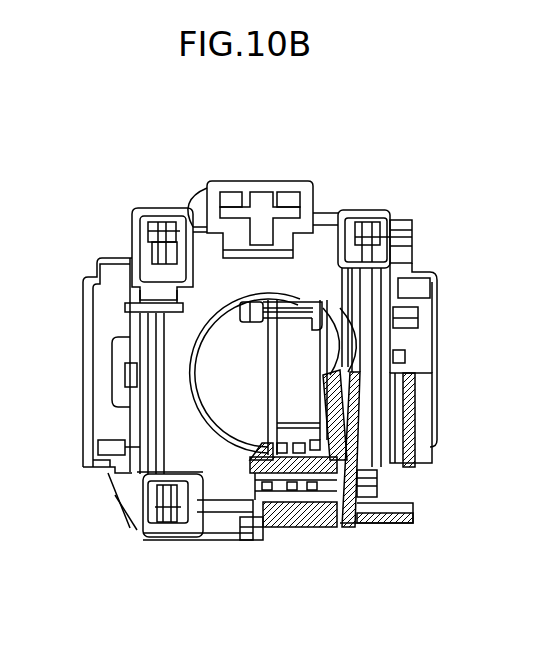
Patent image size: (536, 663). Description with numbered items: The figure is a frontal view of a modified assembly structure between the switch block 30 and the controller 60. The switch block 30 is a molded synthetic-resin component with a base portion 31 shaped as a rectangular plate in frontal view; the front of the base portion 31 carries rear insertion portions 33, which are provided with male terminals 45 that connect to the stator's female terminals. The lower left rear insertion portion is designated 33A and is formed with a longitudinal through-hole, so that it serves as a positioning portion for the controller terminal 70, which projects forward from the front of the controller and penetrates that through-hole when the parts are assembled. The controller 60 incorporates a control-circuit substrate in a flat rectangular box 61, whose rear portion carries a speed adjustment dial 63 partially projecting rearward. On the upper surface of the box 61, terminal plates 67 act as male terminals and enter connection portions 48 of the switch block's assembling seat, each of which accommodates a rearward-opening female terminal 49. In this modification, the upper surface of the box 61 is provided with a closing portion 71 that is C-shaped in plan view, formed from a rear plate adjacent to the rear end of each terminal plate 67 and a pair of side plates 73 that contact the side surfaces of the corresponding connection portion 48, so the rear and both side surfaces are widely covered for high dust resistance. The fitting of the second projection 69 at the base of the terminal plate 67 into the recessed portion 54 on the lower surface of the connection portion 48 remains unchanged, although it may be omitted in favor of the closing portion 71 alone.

The switch block 30 is at (319, 182).
The base portion 31 is at (207, 247).
The rear insertion portion 33 is at (165, 217).
The rear insertion portion 33A is at (380, 217).
The male terminal 45 is at (140, 229).
The connection portion 48 is at (377, 470).
The female terminal 49 is at (247, 510).
The recessed portion 54 is at (313, 530).
The controller 60 is at (447, 360).
The box 61 is at (390, 527).
The speed adjustment dial 63 is at (432, 413).
The terminal plate 67 is at (303, 527).
The second projection 69 is at (347, 527).
The controller terminal 70 is at (412, 237).
The closing portion 71 is at (285, 527).
The side plate 73 is at (265, 447).